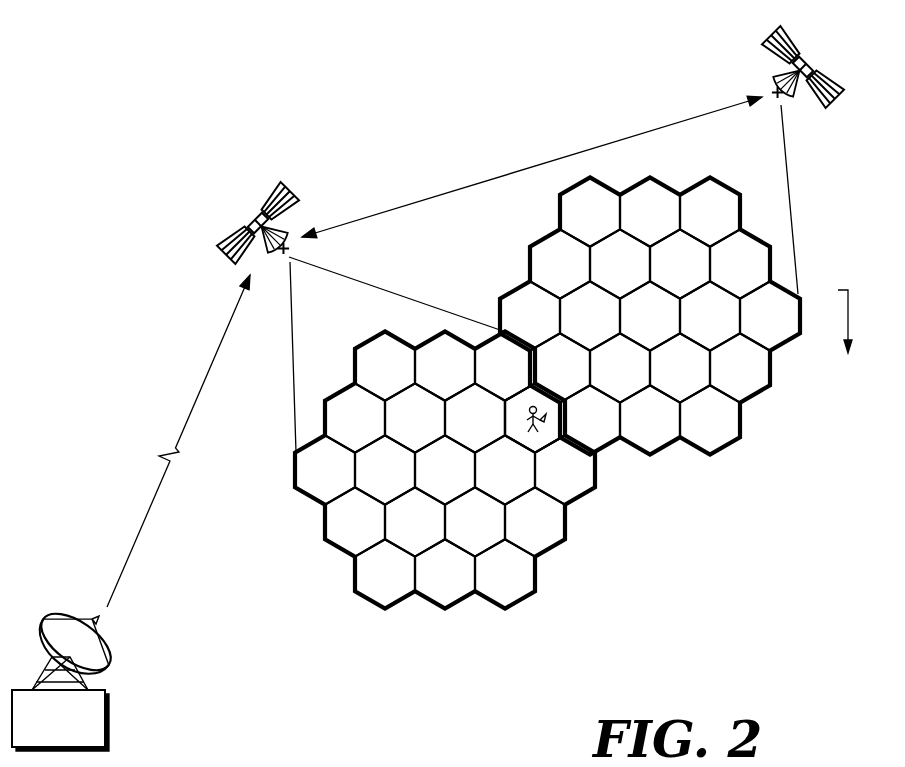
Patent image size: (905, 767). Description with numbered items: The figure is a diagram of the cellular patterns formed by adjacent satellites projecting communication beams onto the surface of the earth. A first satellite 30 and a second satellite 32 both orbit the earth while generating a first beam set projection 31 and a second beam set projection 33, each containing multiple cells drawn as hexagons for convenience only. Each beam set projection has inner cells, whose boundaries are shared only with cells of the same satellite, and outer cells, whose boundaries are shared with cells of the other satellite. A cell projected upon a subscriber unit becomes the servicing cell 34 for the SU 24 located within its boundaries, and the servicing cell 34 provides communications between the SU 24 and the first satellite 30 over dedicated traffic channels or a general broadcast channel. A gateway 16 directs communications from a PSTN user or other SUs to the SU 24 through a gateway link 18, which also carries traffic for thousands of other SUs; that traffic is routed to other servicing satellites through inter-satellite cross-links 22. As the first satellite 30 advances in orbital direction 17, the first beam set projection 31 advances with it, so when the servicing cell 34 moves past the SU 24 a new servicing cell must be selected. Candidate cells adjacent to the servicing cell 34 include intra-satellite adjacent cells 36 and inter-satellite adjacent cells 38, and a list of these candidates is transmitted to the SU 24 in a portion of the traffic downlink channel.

The gateway 16 is at (105, 720).
The orbital direction 17 is at (866, 319).
The gateway link 18 is at (184, 424).
The inter-satellite cross-links 22 is at (620, 141).
The SU 24 is at (543, 427).
The first satellite 30 is at (241, 204).
The first beam set projection 31 is at (386, 289).
The second satellite 32 is at (818, 53).
The second beam set projection 33 is at (792, 213).
The servicing cell 34 is at (515, 433).
The intra-satellite adjacent cells 36 is at (495, 452).
The inter-satellite adjacent cells 38 is at (562, 343).